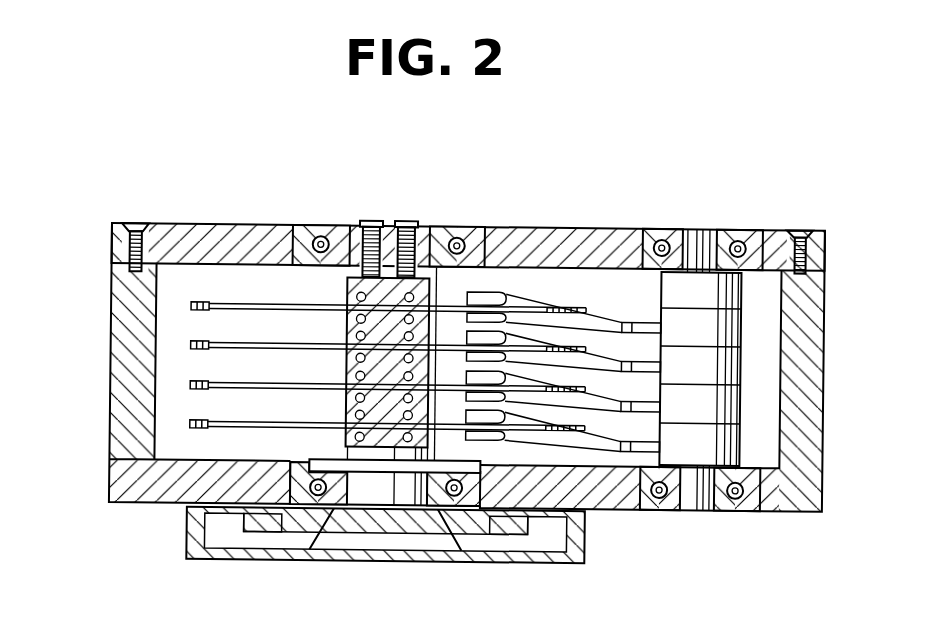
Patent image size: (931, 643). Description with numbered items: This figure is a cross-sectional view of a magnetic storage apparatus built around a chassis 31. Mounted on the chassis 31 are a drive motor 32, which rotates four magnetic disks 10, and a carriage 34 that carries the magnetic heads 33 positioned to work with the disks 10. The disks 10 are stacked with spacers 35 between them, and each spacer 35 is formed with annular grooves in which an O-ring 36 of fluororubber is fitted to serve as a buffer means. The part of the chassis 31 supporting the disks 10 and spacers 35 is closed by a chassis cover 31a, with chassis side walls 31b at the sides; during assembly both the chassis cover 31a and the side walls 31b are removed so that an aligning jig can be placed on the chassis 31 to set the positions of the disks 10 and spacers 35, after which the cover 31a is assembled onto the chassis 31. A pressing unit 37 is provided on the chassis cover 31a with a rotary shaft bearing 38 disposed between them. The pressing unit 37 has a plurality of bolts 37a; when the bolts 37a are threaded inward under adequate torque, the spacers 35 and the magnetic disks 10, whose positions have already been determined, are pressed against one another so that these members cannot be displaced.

The magnetic disk 10 is at (228, 301).
The chassis 31 is at (817, 369).
The chassis cover 31a is at (172, 231).
The chassis side wall 31b is at (120, 332).
The drive motor 32 is at (273, 560).
The magnetic head 33 is at (503, 316).
The carriage 34 is at (690, 277).
The spacer 35 is at (347, 309).
The O-ring 36 is at (366, 444).
The pressing unit 37 is at (390, 224).
The bolt 37a is at (369, 217).
The rotary shaft bearing 38 is at (440, 223).